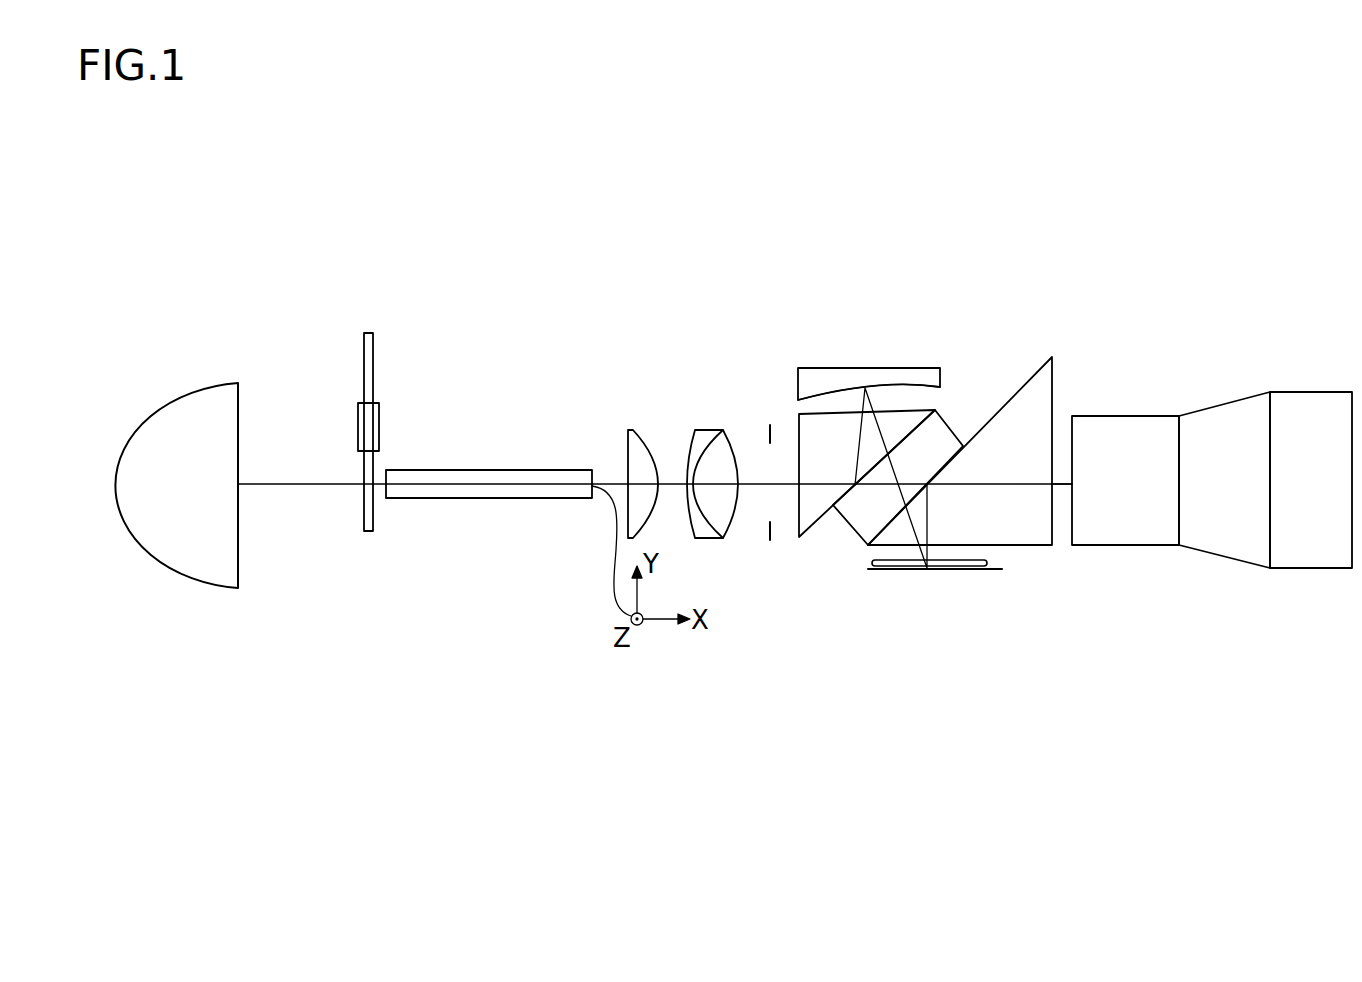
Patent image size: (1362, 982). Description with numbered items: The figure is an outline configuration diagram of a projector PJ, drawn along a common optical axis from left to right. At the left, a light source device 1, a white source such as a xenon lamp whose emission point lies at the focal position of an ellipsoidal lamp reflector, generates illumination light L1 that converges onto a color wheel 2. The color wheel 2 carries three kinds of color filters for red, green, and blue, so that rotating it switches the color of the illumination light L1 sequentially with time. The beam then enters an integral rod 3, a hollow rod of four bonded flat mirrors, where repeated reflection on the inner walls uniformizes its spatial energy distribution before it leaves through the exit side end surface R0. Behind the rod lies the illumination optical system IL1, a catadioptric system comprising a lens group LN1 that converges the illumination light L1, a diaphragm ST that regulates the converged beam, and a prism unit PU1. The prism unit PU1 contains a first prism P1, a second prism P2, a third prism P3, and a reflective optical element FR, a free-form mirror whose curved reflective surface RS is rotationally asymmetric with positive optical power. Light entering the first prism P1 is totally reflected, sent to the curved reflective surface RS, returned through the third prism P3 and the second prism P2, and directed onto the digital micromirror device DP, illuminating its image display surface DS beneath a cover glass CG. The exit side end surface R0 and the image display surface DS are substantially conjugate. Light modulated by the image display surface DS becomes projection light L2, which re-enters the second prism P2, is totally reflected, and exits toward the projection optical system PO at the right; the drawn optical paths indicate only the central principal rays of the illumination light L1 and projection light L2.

The light source device 1 is at (240, 577).
The color wheel 2 is at (374, 354).
The integral rod 3 is at (476, 499).
The exit side end surface R0 is at (597, 473).
The illumination light L1 is at (610, 470).
The lens group LN1 is at (613, 341).
The illumination optical system IL1 is at (613, 278).
The projector PJ is at (1358, 213).
The prism unit PU1 is at (783, 341).
The reflective optical element FR is at (798, 386).
The curved reflective surface RS is at (933, 389).
The first prism P1 is at (811, 449).
The second prism P2 is at (1008, 542).
The third prism P3 is at (908, 466).
The diaphragm ST is at (772, 543).
The cover glass CG is at (872, 563).
The digital micromirror device DP is at (912, 601).
The image display surface DS is at (992, 571).
The projection light L2 is at (1063, 492).
The projection optical system PO is at (1063, 278).